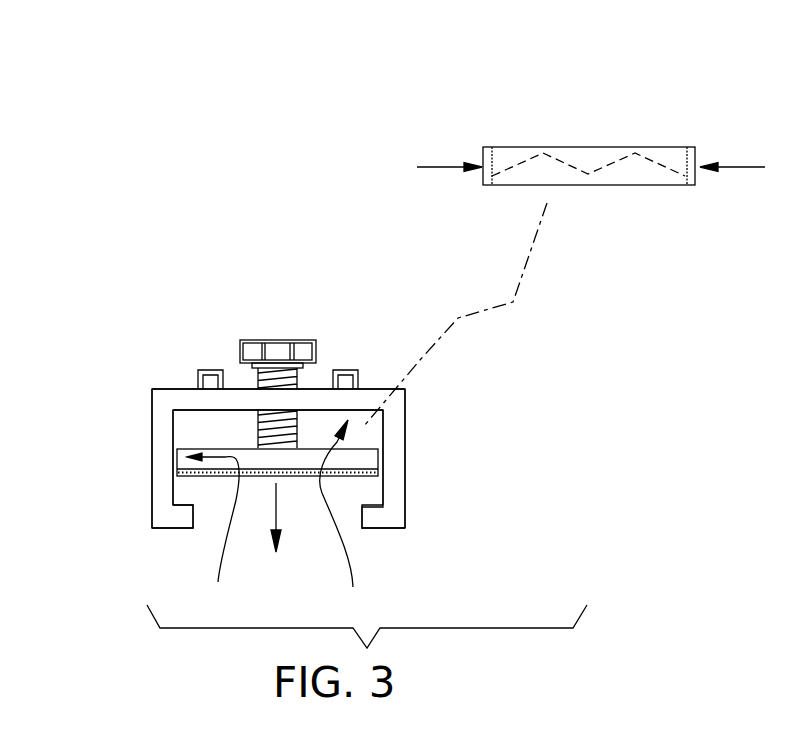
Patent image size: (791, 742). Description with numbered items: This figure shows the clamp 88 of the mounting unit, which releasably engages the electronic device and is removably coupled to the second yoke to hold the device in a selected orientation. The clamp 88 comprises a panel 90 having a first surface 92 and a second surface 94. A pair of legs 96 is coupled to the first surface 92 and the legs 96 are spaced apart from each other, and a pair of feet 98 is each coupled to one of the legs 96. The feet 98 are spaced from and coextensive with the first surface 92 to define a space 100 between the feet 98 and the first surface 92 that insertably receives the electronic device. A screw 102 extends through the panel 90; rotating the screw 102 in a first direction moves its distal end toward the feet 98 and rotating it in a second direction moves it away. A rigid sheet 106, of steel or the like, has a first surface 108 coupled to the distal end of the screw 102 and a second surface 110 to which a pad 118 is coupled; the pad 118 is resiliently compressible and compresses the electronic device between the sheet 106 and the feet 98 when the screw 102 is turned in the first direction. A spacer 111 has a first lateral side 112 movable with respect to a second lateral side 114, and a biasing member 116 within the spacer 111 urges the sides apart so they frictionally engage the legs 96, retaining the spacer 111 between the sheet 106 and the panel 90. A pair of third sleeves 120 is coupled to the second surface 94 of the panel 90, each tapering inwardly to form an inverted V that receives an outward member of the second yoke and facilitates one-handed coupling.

The clamp 88 is at (203, 357).
The panel 90 is at (320, 388).
The first surface 92 is at (172, 418).
The second surface 94 is at (383, 388).
The legs 96 is at (152, 473).
The feet 98 is at (167, 528).
The space 100 is at (286, 522).
The screw 102 is at (257, 383).
The sheet 106 is at (374, 455).
The first surface 108 is at (218, 448).
The second surface 110 is at (292, 476).
The spacer 111 is at (581, 136).
The first lateral side 112 is at (483, 157).
The second lateral side 114 is at (696, 157).
The biasing member 116 is at (620, 162).
The pad 118 is at (363, 476).
The third sleeves 120 is at (198, 370).